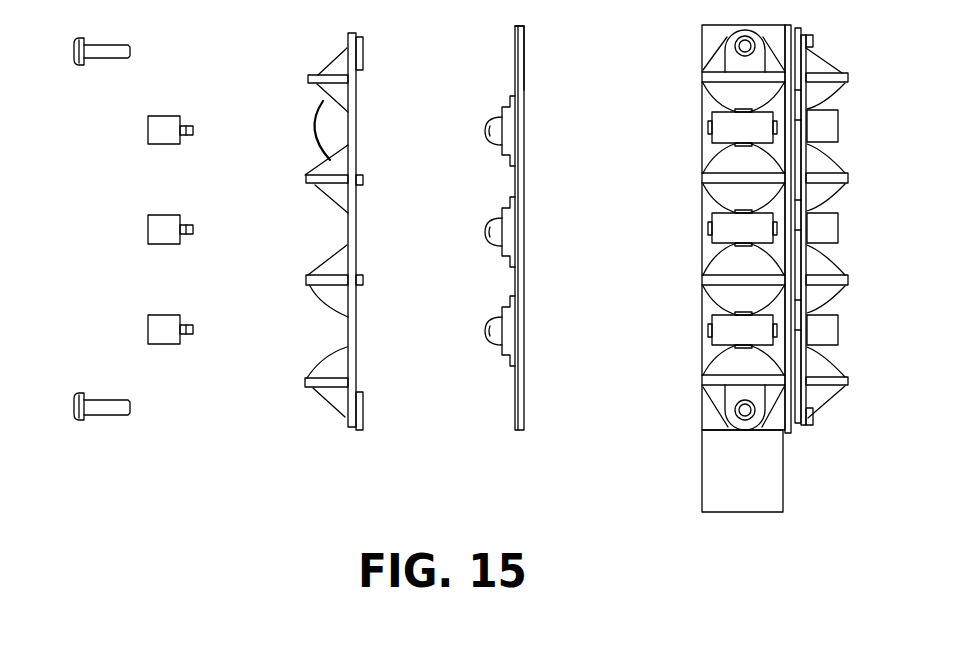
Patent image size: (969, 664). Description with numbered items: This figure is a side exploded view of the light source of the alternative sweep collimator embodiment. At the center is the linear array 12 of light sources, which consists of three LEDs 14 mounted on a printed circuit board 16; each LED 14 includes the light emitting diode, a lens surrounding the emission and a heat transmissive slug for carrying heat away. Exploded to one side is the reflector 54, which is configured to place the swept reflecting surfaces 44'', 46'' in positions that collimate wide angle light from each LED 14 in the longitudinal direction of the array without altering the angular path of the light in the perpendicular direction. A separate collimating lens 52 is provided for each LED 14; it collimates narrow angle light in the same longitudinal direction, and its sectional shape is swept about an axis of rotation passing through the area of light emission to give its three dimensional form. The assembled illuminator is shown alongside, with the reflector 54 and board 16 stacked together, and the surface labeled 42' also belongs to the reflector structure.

The linear array 12 is at (501, 396).
The LED 14 is at (485, 128).
The printed circuit board 16 is at (515, 71).
The reflector 42' is at (300, 129).
The swept reflecting surface 44'' is at (295, 207).
The swept reflecting surface 46'' is at (284, 270).
The collimating lens 52 is at (159, 119).
The reflector 54 is at (333, 405).